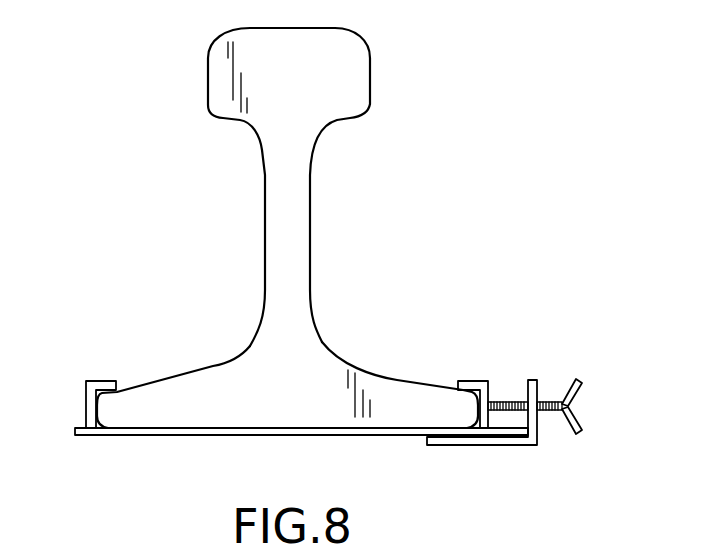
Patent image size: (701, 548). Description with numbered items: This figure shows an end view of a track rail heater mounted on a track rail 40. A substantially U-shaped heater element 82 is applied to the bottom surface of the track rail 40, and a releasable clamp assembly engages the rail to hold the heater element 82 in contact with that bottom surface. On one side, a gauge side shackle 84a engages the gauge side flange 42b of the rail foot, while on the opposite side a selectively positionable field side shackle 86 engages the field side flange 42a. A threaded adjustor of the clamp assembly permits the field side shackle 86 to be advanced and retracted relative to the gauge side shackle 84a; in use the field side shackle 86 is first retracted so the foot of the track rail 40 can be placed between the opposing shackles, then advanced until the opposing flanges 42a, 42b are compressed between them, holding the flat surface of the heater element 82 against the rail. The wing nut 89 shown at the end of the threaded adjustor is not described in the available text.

The track rail 40 is at (355, 68).
The field side flange 42a is at (438, 418).
The gauge side flange 42b is at (168, 418).
The heater element 82 is at (333, 430).
The gauge side shackle 84a is at (103, 390).
The field side shackle 86 is at (485, 388).
The wing nut screw 89 is at (557, 397).